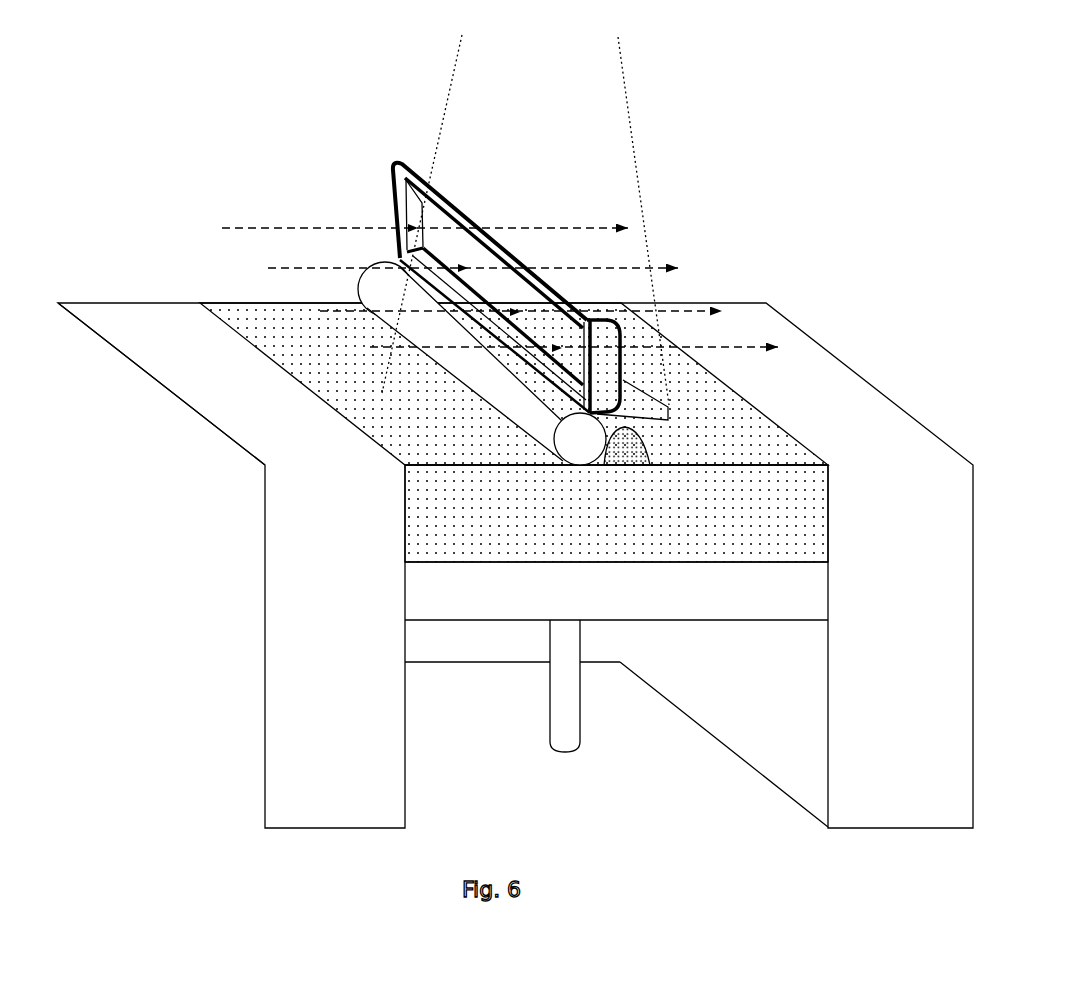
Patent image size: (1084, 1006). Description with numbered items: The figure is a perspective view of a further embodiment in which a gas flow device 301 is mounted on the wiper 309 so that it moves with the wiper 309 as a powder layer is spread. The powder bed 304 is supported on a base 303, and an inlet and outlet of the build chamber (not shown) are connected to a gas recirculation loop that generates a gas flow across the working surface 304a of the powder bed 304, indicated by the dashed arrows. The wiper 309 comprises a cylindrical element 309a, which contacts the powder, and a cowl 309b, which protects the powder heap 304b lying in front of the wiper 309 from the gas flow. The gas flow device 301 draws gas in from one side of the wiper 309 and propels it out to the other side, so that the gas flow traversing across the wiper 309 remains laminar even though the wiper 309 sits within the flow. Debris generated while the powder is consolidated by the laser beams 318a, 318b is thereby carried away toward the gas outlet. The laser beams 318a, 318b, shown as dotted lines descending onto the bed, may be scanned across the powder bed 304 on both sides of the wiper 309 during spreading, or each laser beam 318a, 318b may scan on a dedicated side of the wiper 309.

The gas flow device 301 is at (395, 182).
The base table 303 is at (613, 600).
The powder bed 304 is at (697, 530).
The working surface 304a is at (278, 323).
The powder heap 304b is at (637, 455).
The wiper 309 is at (482, 413).
The cylindrical element 309a is at (573, 447).
The cowl 309b is at (658, 414).
The laser beam 318a is at (440, 123).
The laser beam 318b is at (636, 134).